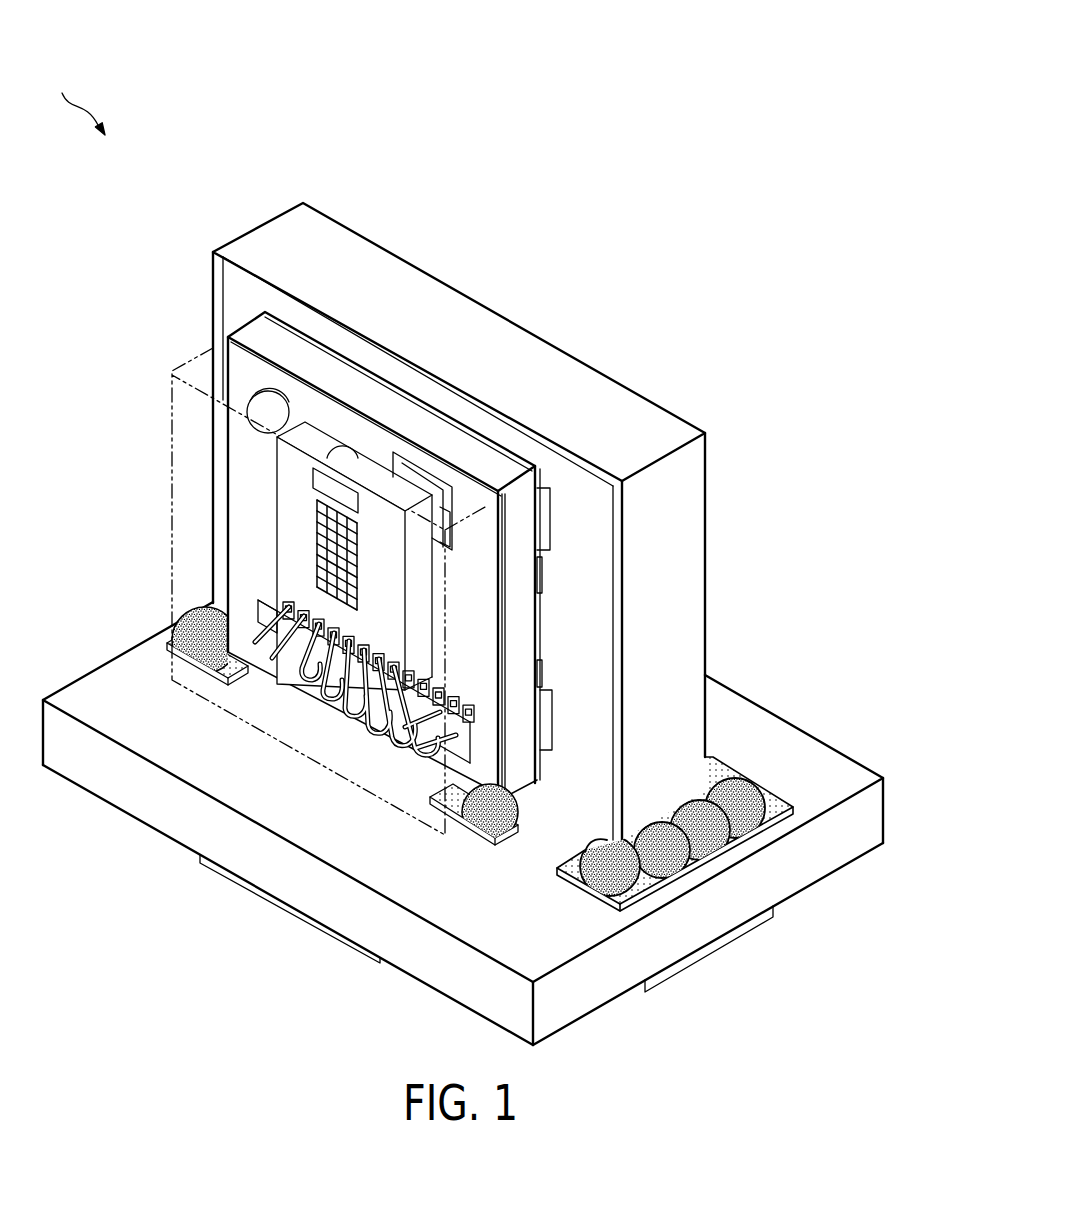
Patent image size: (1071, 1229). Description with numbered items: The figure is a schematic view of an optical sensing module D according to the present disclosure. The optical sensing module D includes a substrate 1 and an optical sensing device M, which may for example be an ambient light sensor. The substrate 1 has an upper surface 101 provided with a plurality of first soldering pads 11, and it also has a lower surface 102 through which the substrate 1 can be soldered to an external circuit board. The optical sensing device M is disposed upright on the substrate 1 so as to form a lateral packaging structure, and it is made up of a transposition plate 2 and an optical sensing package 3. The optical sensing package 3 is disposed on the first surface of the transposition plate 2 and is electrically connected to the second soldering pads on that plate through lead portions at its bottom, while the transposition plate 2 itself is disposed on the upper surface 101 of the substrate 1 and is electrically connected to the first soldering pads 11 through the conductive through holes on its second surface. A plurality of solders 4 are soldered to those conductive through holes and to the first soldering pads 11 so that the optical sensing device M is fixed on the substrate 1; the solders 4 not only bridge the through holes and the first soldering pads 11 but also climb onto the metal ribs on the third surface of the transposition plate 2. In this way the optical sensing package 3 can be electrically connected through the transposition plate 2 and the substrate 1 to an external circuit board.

The substrate 1 is at (861, 861).
The upper surface 101 is at (798, 726).
The lower surface 102 is at (822, 894).
The first soldering pad 11 is at (780, 794).
The transposition plate 2 is at (486, 308).
The optical sensing package 3 is at (250, 321).
The solder 4 is at (746, 783).
The optical sensing device M is at (922, 3).
The optical sensing module D is at (77, 95).